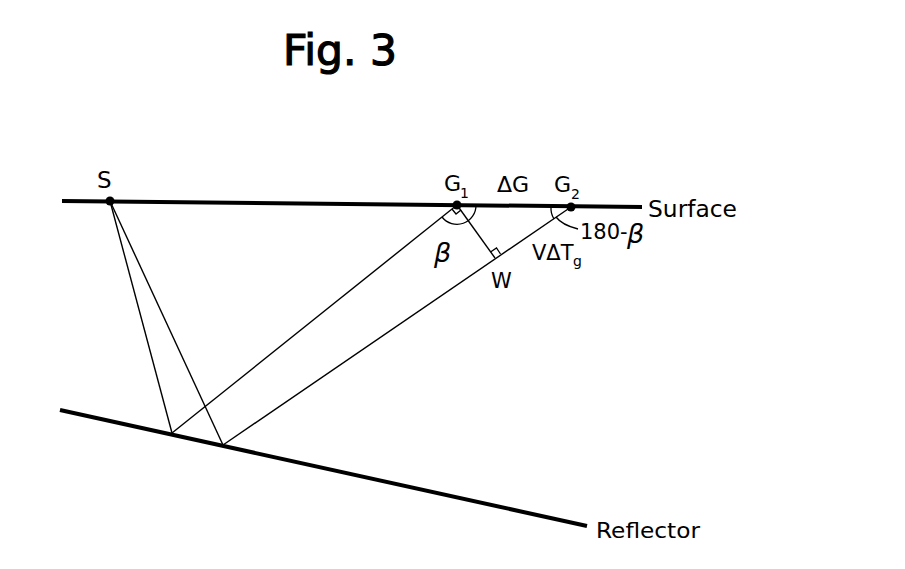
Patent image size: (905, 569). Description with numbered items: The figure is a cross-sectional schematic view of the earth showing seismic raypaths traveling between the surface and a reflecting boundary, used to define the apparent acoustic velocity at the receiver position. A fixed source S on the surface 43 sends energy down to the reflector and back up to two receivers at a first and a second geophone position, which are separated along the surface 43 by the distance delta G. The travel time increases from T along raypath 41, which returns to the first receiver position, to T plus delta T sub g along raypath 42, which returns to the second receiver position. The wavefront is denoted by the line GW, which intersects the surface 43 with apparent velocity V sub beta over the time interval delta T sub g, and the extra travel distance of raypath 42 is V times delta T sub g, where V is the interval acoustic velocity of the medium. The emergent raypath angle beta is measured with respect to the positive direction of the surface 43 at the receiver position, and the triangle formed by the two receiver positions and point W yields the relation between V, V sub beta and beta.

The raypath 41 is at (361, 281).
The raypath 42 is at (429, 304).
The surface 43 is at (622, 206).